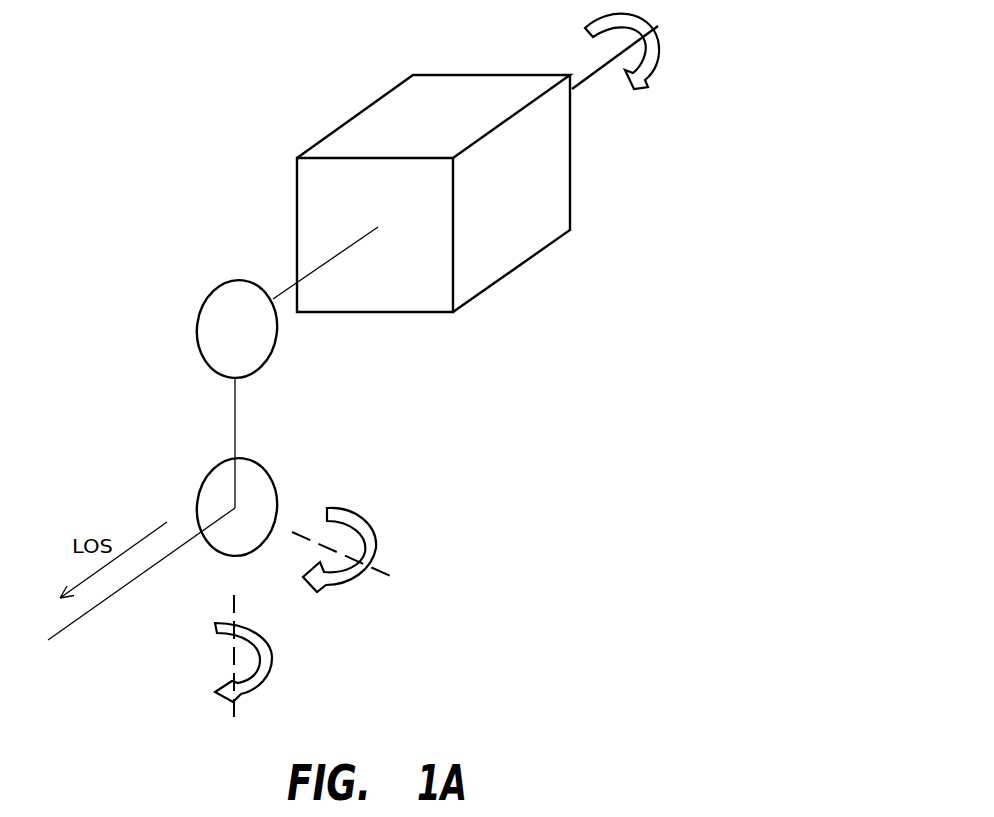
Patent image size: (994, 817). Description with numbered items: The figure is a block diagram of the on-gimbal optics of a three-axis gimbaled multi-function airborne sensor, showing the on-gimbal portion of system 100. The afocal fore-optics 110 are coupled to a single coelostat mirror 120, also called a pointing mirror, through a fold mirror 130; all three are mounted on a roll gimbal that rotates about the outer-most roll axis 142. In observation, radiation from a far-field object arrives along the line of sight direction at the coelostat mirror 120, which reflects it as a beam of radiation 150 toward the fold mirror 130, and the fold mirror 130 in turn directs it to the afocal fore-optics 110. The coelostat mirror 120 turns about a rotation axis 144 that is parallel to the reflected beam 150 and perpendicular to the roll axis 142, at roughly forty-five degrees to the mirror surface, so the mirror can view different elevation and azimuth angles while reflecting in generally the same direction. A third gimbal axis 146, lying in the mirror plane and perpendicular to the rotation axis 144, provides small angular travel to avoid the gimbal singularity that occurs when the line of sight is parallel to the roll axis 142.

The on-gimbal portion of system 100 is at (203, 98).
The afocal fore-optics 110 is at (382, 97).
The coelostat mirror 120 is at (272, 472).
The fold mirror 130 is at (207, 300).
The roll axis 142 is at (598, 65).
The rotation axis 144 is at (235, 717).
The third gimbal axis 146 is at (375, 570).
The reflected radiation beam 150 is at (235, 423).